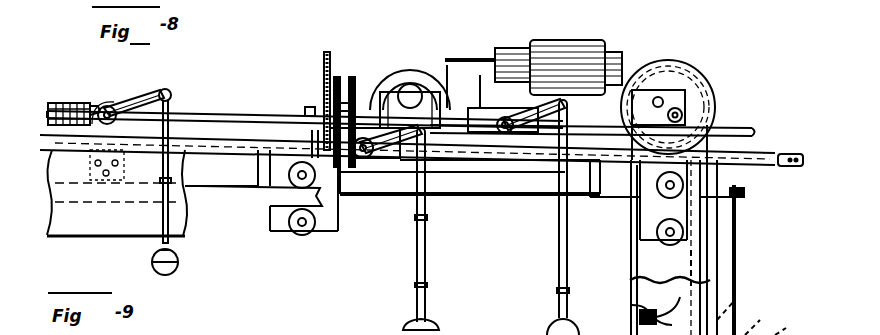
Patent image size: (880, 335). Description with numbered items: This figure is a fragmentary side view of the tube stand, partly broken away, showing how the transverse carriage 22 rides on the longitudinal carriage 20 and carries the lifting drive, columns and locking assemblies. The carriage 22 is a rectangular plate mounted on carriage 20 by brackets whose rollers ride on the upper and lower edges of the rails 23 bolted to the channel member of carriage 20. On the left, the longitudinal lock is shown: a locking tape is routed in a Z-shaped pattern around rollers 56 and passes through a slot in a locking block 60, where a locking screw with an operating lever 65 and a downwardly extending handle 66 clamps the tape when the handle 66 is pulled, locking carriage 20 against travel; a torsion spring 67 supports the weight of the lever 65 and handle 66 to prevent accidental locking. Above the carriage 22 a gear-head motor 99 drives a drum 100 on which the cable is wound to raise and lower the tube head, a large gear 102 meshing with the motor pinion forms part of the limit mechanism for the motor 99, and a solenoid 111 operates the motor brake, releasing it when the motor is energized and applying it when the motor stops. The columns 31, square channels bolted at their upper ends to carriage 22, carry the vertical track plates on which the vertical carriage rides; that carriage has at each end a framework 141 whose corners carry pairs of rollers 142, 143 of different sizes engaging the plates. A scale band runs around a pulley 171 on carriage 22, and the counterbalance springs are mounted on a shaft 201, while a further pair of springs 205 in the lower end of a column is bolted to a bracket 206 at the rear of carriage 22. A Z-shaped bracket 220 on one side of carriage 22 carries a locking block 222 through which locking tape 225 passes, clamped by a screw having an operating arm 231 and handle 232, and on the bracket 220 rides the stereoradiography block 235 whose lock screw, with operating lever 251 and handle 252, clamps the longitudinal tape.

The carriage 20 is at (60, 236).
The transverse carriage 22 is at (481, 185).
The rails 23 is at (327, 233).
The columns 31 is at (637, 270).
The rollers 56 is at (60, 101).
The locking block 60 is at (101, 106).
The operating lever 65 is at (150, 98).
The handle 66 is at (160, 240).
The torsion spring 67 is at (90, 106).
The motor 99 is at (414, 62).
The drum 100 is at (340, 80).
The large gear 102 is at (326, 66).
The solenoid 111 is at (578, 46).
The framework 141 is at (797, 327).
The roller 142 is at (770, 320).
The roller 143 is at (722, 333).
The pulley 171 is at (700, 80).
The shaft 201 is at (661, 99).
The springs 205 is at (738, 230).
The bracket 206 is at (744, 194).
The Z-shaped bracket 220 is at (517, 168).
The locking block 222 is at (386, 188).
The locking tape 225 is at (757, 160).
The operating arm 231 is at (395, 127).
The handle 232 is at (415, 300).
The block 235 is at (486, 115).
The operating lever 251 is at (524, 84).
The handle 252 is at (557, 285).